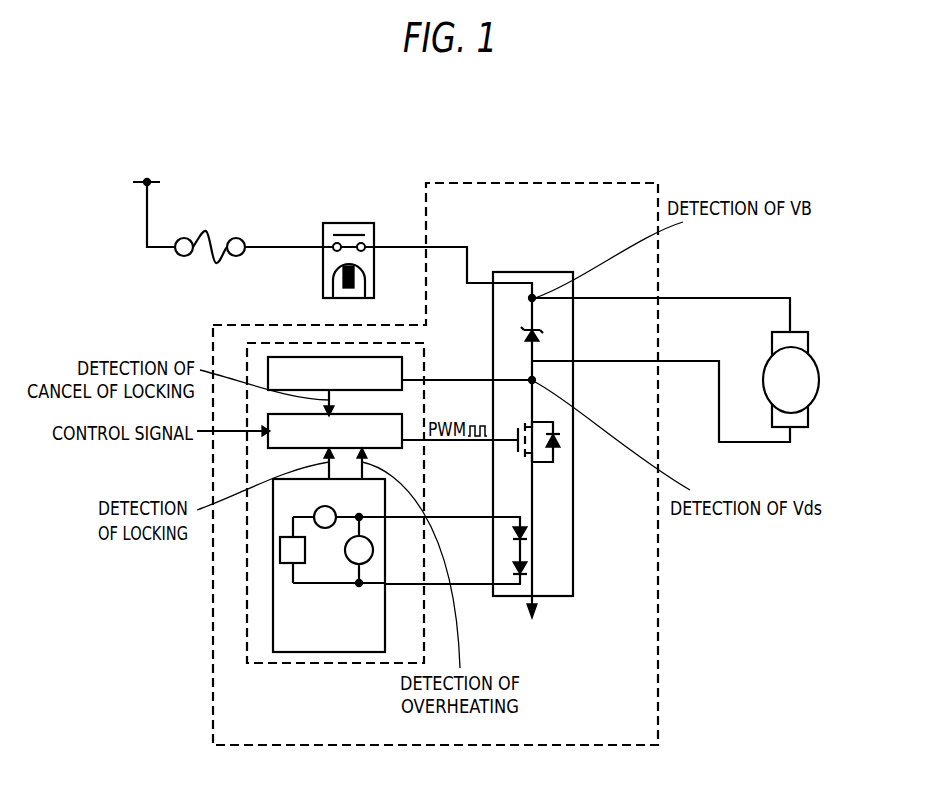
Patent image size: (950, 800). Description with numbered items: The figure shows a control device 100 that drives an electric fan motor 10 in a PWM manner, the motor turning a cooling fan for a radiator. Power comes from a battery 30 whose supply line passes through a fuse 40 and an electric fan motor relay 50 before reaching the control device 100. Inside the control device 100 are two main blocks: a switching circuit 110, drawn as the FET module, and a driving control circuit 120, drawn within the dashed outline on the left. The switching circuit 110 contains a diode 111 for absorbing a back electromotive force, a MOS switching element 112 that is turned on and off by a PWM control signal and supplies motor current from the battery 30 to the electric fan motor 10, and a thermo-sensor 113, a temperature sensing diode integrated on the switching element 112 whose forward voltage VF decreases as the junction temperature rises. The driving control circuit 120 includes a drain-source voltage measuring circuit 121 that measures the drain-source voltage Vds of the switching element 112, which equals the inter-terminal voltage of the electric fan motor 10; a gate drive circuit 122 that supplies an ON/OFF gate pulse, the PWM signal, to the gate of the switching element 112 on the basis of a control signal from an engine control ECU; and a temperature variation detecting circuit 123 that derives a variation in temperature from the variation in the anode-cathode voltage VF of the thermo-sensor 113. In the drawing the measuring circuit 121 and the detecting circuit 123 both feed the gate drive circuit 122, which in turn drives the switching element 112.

The electric fan motor 10 is at (820, 372).
The battery 30 is at (140, 188).
The fuse 40 is at (193, 259).
The electric fan motor relay 50 is at (333, 223).
The control device 100 is at (478, 183).
The switching circuit 110 is at (574, 283).
The diode 111 is at (543, 340).
The MOS switching element 112 is at (558, 457).
The thermo-sensor 113 is at (522, 586).
The driving control circuit 120 is at (247, 598).
The drain-source voltage (Vds) measuring circuit 121 is at (285, 357).
The gate drive circuit 122 is at (272, 450).
The temperature variation detecting circuit 123 is at (273, 612).